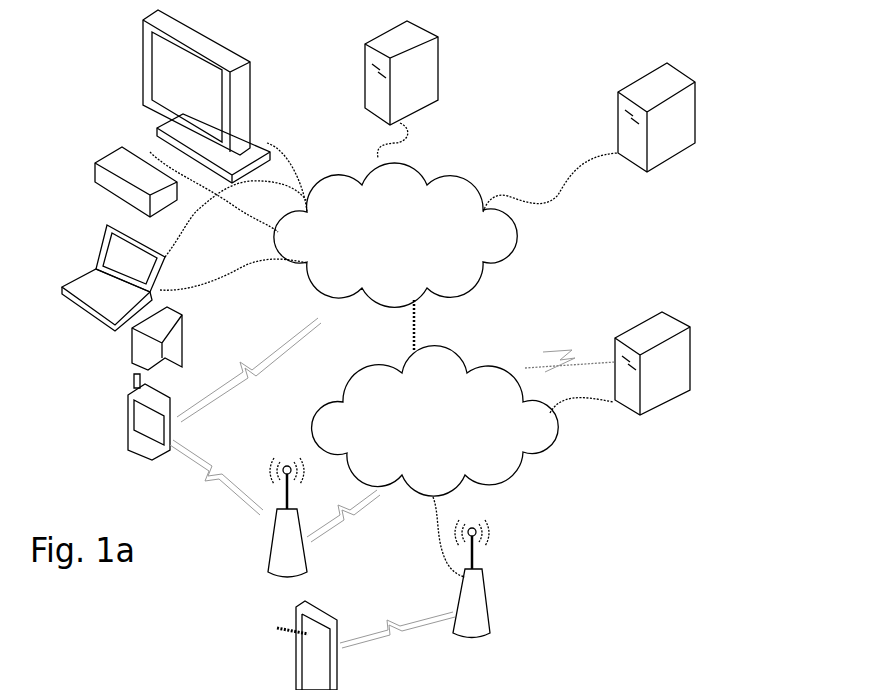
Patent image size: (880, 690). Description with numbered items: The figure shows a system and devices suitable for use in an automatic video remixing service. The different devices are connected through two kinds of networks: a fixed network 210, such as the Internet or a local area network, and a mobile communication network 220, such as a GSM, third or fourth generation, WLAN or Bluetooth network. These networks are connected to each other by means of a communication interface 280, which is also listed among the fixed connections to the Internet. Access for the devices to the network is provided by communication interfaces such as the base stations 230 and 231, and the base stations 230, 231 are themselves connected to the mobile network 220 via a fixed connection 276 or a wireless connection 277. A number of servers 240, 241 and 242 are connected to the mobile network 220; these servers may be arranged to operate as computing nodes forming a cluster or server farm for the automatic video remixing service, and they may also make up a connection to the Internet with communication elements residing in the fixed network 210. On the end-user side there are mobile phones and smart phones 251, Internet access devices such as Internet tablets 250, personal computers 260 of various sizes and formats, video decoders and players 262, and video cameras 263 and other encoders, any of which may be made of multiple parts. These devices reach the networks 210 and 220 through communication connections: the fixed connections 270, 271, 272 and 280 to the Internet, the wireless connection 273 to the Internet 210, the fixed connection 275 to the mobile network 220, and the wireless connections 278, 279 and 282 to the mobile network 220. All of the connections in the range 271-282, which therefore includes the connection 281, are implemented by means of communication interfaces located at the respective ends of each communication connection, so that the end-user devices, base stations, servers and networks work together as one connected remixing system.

The fixed network 210 is at (506, 272).
The mobile communication network 220 is at (513, 486).
The base station 230 is at (267, 568).
The base station 231 is at (490, 594).
The server 240 is at (447, 49).
The server 241 is at (703, 101).
The server 242 is at (697, 346).
The Internet access device 250 is at (290, 668).
The mobile phone 251 is at (127, 425).
The personal computer 260 is at (95, 250).
The video decoder and player 262 is at (102, 152).
The video camera 263 is at (187, 307).
The fixed connection 270 is at (240, 258).
The fixed connection 271 is at (372, 148).
The fixed connection 272 is at (558, 188).
The wireless connection 273 is at (245, 355).
The fixed connection 275 is at (573, 398).
The fixed connection 276 is at (437, 568).
The wireless connection 277 is at (338, 542).
The wireless connection 278 is at (395, 643).
The wireless connection 279 is at (223, 460).
The communication interface 280 is at (420, 340).
The communication connection 281 is at (128, 75).
The wireless connection 282 is at (540, 324).